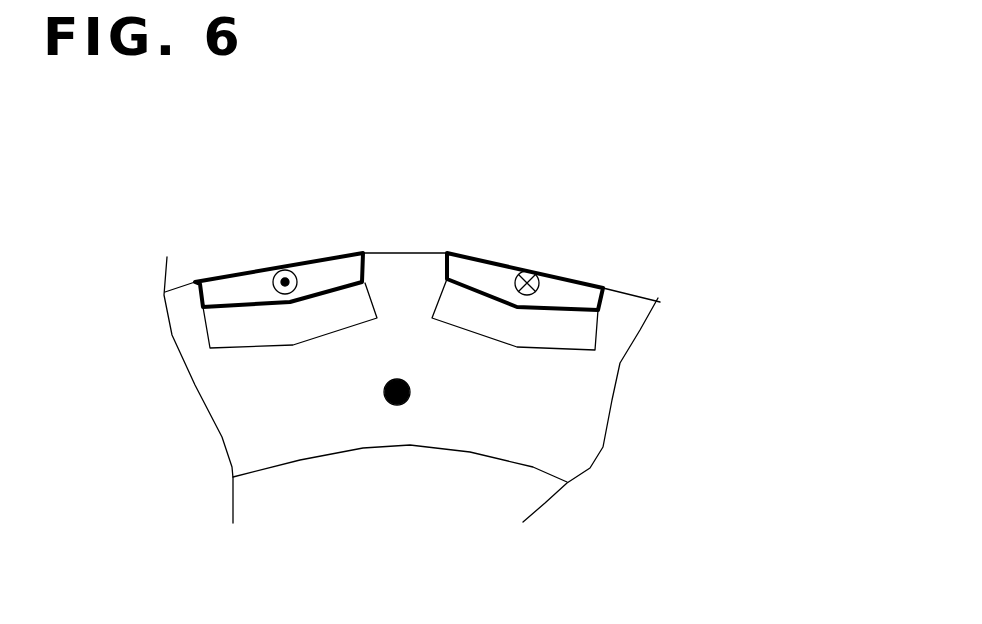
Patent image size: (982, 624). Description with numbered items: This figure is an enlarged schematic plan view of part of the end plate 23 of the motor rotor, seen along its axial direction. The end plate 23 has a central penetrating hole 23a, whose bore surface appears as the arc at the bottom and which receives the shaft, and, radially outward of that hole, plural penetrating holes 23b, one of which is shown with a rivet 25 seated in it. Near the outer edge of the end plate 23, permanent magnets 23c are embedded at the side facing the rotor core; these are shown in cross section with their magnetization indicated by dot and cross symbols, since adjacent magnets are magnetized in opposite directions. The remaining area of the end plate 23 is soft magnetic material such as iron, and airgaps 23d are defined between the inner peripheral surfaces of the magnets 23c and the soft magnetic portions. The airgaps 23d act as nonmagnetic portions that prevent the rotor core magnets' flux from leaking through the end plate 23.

The end plate 23 is at (405, 249).
The penetrating hole 23a is at (540, 470).
The penetrating holes 23b is at (380, 395).
The permanent magnets 23c is at (563, 285).
The airgaps 23d is at (222, 332).
The rivets 25 is at (398, 407).